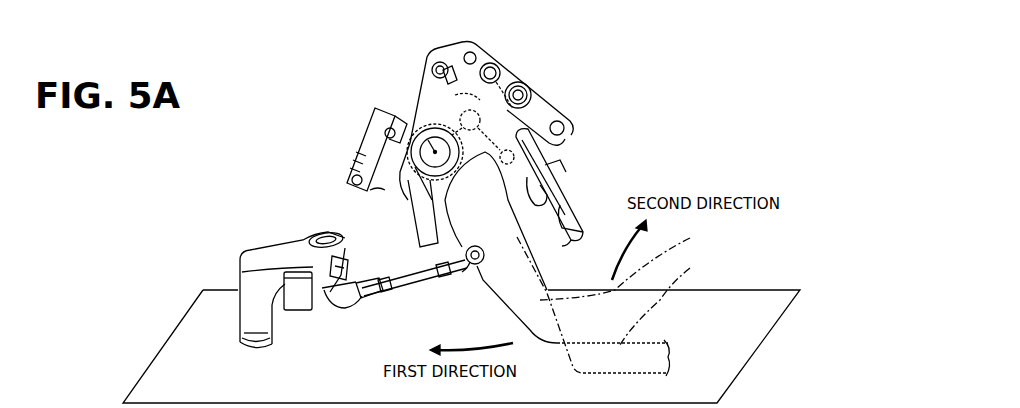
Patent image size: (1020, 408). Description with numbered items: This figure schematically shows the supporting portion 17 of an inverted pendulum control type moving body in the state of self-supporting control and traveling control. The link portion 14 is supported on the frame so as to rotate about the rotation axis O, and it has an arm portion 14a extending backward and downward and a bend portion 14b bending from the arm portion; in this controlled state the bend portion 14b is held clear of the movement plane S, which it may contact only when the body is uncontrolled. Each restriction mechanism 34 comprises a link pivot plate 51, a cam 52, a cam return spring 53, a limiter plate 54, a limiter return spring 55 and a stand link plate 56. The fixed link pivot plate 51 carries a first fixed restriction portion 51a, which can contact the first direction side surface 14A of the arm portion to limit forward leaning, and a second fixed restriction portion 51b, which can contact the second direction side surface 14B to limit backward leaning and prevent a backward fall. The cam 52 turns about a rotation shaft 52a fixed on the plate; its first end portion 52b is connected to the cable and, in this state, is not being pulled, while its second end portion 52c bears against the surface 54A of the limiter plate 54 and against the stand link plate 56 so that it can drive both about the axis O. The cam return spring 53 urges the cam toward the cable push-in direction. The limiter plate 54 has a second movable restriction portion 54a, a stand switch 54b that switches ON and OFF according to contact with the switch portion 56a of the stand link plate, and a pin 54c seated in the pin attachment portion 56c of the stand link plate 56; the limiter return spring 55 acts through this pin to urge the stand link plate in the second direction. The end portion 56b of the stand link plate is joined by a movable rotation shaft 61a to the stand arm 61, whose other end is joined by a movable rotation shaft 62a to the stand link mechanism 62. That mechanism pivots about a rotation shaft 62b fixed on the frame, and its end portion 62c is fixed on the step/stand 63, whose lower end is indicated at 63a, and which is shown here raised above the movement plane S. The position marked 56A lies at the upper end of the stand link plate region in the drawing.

The link portion 14 is at (733, 230).
The arm portion 14a is at (637, 263).
The bend portion 14b is at (677, 300).
The first direction side surface 14A is at (487, 280).
The second direction side surface 14B is at (522, 244).
The supporting portion 17 is at (218, 320).
The restriction mechanism 34 is at (665, 61).
The link pivot plate 51 is at (453, 50).
The first fixed restriction portion 51a is at (410, 243).
The second fixed restriction portion 51b is at (548, 193).
The cam 52 is at (545, 105).
The rotation shaft 52a is at (531, 102).
The first end portion 52b is at (573, 120).
The second end portion 52c is at (477, 102).
The cam return spring 53 is at (436, 63).
The limiter plate 54 is at (575, 212).
The second movable restriction portion 54a is at (575, 243).
The stand switch 54b is at (360, 148).
The pin 54c is at (543, 157).
The surface 54A is at (507, 92).
The limiter return spring 55 is at (444, 75).
The stand link plate 56 is at (563, 140).
The switch portion 56a is at (380, 186).
The end portion 56b is at (466, 272).
The pin attachment portion 56c is at (540, 168).
The arm pivot 56A is at (530, 100).
The stand arm 61 is at (421, 280).
The movable rotation shaft 61a is at (468, 245).
The stand link mechanism 62 is at (341, 311).
The movable rotation shaft 62a is at (357, 283).
The rotation shaft 62b is at (314, 232).
The end portion 62c is at (325, 308).
The step/stand 63 is at (253, 258).
The actuator foot 63a is at (256, 347).
The rotation axis O is at (410, 130).
The movement plane S is at (166, 373).